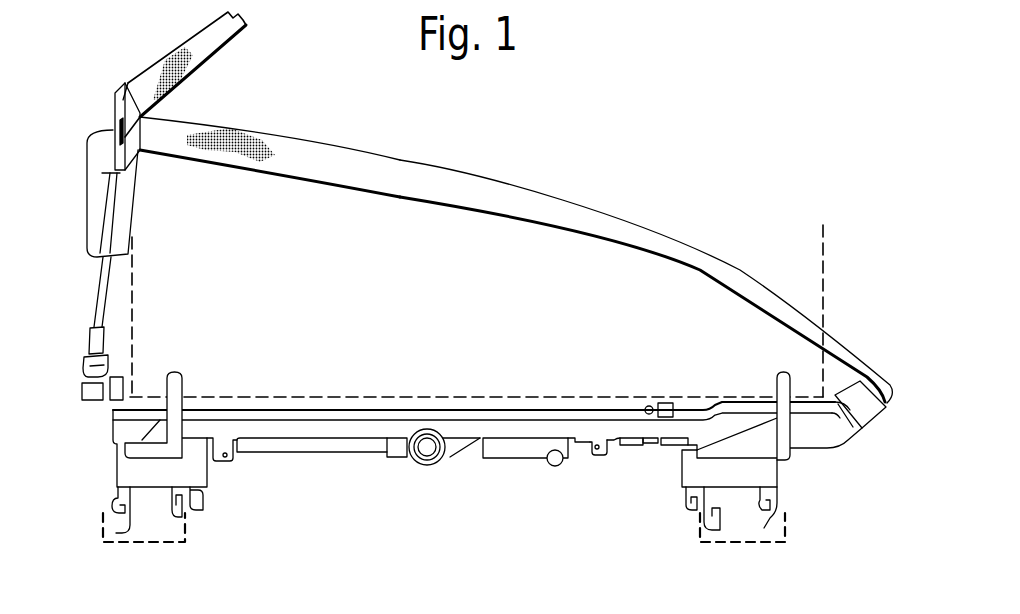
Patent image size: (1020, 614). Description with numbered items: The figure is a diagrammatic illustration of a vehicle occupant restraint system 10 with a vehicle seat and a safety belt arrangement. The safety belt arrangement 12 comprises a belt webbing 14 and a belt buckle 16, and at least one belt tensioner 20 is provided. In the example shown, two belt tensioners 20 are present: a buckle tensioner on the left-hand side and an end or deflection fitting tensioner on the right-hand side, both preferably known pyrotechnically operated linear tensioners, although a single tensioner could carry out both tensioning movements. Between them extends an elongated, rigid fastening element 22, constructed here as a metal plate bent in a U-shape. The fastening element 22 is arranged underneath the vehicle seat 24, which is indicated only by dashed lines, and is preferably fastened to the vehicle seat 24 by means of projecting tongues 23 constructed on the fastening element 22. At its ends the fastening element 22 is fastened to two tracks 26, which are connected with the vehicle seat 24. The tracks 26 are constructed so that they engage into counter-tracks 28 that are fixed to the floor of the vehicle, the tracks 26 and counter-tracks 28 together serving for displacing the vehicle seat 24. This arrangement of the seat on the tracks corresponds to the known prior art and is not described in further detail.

The vehicle occupant restraint system 10 is at (633, 125).
The safety belt arrangement 12 is at (332, 144).
The belt webbing 14 is at (452, 182).
The belt buckle 16 is at (91, 152).
The belt tensioner 20 is at (365, 448).
The fastening element 22 is at (327, 430).
The projecting tongues 23 is at (231, 461).
The vehicle seat 24 is at (432, 343).
The tracks 26 is at (112, 505).
The counter-tracks 28 is at (132, 543).